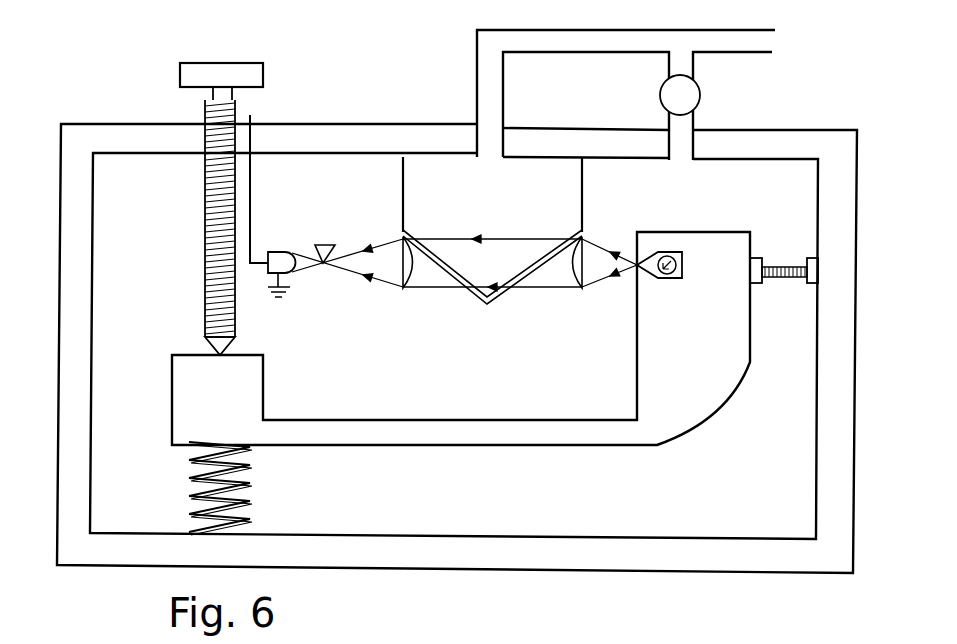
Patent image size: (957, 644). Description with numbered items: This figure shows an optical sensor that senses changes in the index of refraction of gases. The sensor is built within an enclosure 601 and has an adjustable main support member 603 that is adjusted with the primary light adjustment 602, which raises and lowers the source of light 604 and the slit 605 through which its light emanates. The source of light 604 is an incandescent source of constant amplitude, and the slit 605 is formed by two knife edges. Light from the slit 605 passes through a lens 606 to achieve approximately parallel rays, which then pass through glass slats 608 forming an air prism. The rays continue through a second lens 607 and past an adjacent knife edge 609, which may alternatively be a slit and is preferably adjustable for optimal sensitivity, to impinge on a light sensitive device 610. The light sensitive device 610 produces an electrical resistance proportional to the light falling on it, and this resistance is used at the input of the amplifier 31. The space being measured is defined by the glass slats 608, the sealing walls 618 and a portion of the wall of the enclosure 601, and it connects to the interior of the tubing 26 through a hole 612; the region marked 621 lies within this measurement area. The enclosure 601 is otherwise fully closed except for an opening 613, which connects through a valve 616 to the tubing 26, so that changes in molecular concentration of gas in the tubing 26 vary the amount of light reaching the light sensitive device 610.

The enclosure 601 is at (92, 355).
The primary light adjustment 602 is at (225, 63).
The adjustable main support member 603 is at (464, 420).
The source of light 604 is at (677, 259).
The slit 605 is at (637, 266).
The lens 606 is at (575, 293).
The lens 607 is at (408, 290).
The glass slats 608 is at (467, 300).
The knife edge 609 is at (323, 244).
The light sensitive device 610 is at (280, 251).
The hole 612 is at (491, 161).
The opening 613 is at (681, 166).
The valve 616 is at (661, 88).
The sealing walls 618 is at (390, 178).
The chamber 621 is at (527, 228).
The tubing 26 is at (775, 33).
The amplifier 31 is at (250, 115).